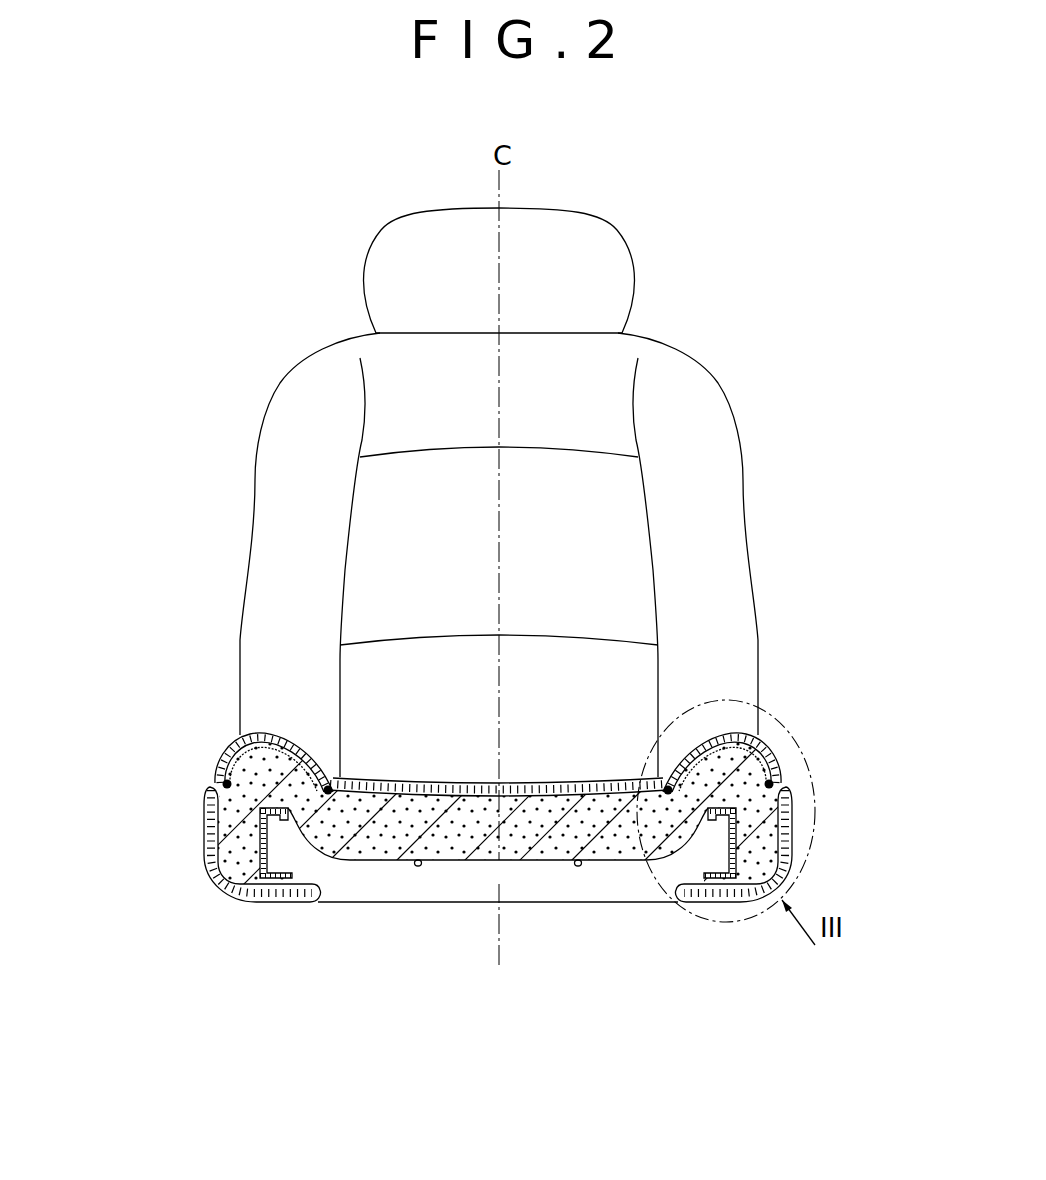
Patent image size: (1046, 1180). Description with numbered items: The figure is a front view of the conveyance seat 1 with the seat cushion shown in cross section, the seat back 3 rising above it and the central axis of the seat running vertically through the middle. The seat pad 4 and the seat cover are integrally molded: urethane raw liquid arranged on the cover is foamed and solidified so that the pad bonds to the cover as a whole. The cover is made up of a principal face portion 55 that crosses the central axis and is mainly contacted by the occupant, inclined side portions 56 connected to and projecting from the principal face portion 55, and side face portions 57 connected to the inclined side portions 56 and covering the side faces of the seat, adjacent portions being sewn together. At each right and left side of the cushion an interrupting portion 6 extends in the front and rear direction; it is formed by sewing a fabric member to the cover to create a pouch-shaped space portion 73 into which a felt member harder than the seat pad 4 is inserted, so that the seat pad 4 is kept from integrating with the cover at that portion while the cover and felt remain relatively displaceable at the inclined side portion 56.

The conveyance seat 1 is at (705, 215).
The seat back 3 is at (707, 528).
The seat pad 4 is at (377, 840).
The interrupting portion 6 is at (238, 737).
The principal face portion 55 is at (543, 780).
The inclined side portion 56 is at (697, 745).
The side face portion 57 is at (208, 822).
The space portion 73 is at (265, 735).